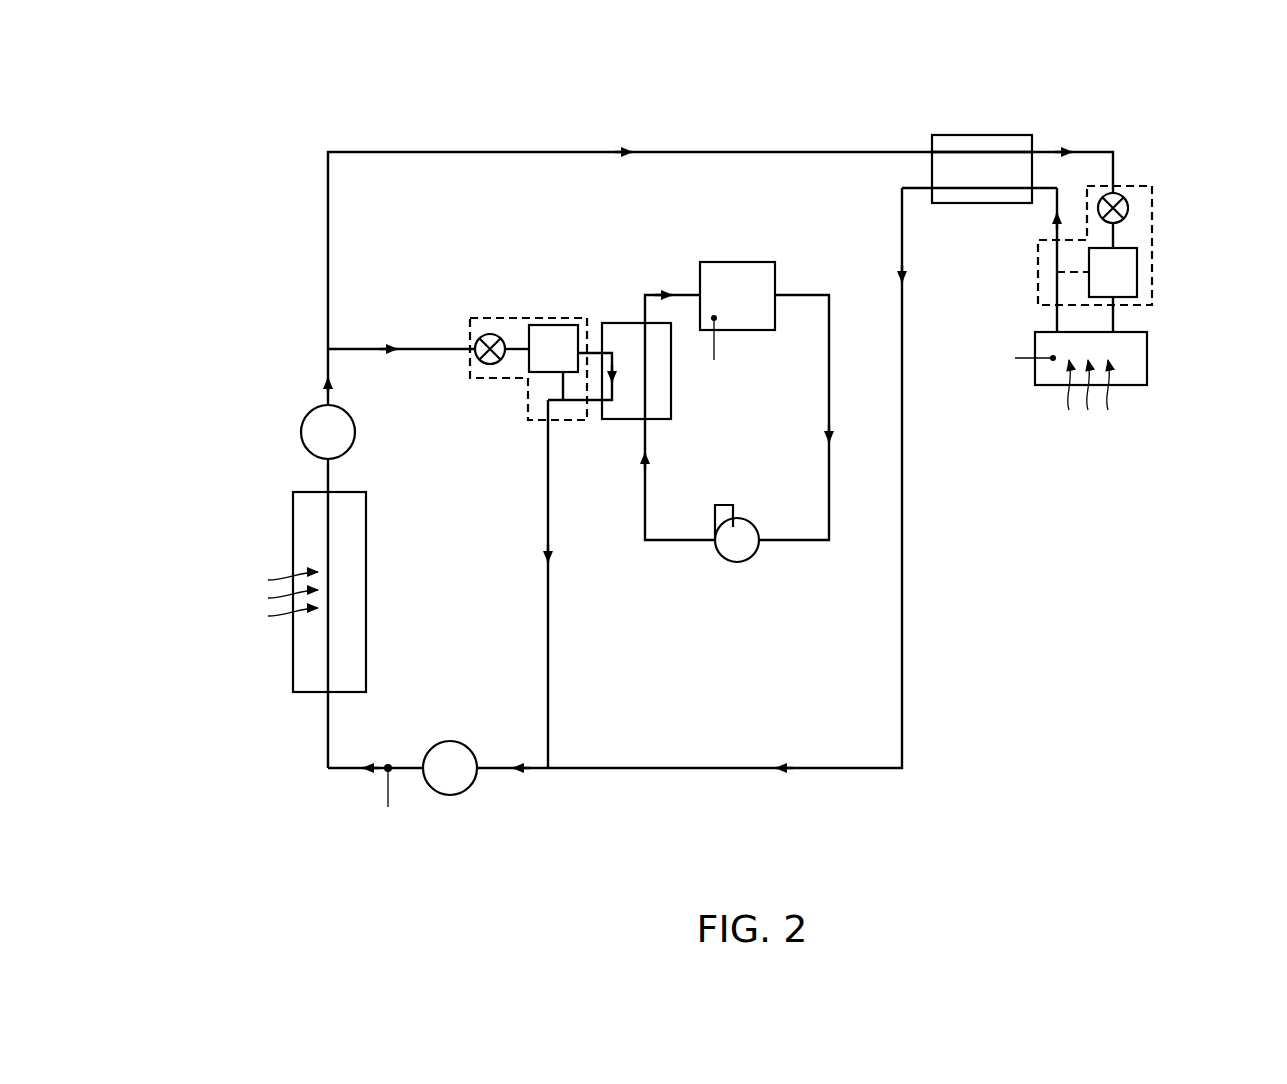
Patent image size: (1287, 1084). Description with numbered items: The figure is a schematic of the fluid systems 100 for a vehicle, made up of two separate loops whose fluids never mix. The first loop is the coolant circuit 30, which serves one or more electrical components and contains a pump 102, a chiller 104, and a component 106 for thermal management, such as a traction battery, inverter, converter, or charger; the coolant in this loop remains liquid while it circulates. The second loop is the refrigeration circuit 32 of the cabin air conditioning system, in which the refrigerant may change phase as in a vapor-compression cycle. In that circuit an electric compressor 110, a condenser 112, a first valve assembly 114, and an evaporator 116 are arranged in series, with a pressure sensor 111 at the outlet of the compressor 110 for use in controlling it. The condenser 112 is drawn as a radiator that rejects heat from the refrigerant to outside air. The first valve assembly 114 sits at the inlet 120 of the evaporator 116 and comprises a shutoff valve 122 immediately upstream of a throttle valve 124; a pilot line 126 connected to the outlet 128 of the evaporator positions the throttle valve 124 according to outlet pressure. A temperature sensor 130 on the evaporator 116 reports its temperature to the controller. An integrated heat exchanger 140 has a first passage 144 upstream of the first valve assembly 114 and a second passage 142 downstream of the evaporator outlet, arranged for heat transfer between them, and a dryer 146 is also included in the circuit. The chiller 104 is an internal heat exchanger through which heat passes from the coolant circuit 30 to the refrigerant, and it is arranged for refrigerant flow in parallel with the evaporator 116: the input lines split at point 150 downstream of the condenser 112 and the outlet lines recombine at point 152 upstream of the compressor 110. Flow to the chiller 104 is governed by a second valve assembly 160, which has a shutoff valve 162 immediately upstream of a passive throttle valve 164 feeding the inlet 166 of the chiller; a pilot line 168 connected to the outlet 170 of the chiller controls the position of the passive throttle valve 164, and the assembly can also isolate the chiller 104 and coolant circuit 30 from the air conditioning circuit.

The fluid systems 100 is at (277, 262).
The coolant circuit 30 is at (670, 562).
The refrigeration circuit 32 is at (684, 788).
The pump 102 is at (740, 562).
The chiller 104 is at (634, 322).
The component 106 is at (750, 280).
The electric compressor 110 is at (452, 795).
The pressure sensor 111 is at (388, 760).
The condenser 112 is at (355, 613).
The first valve assembly 114 is at (1155, 243).
The evaporator 116 is at (1147, 355).
The inlet 120 is at (1113, 318).
The shutoff valve 122 is at (1128, 205).
The throttle valve 124 is at (1137, 272).
The pilot line 126 is at (1078, 272).
The outlet 128 is at (1057, 315).
The temperature sensor 130 is at (1018, 360).
The integrated heat exchanger 140 is at (1016, 135).
The second passage 142 is at (975, 195).
The first passage 144 is at (960, 145).
The dryer 146 is at (301, 432).
The split point 150 is at (328, 348).
The combine point 152 is at (548, 770).
The second valve assembly 160 is at (492, 316).
The shutoff valve 162 is at (490, 363).
The passive throttle valve 164 is at (555, 325).
The inlet 166 is at (597, 352).
The pilot line 168 is at (561, 389).
The outlet 170 is at (578, 405).